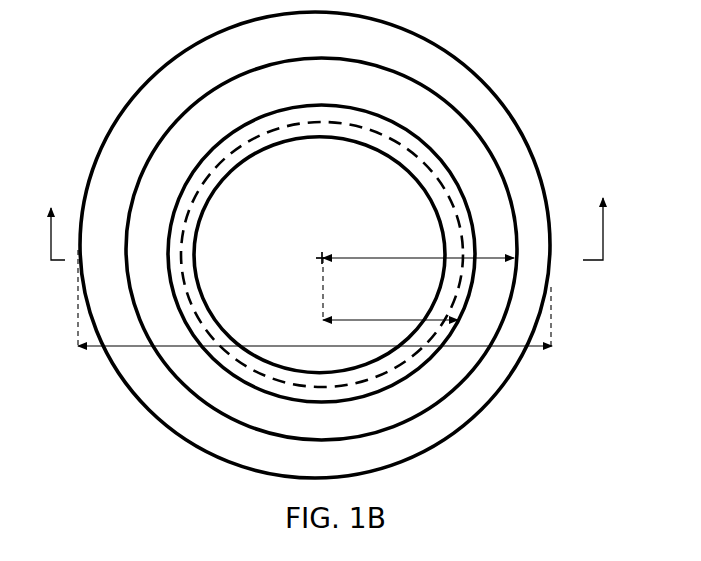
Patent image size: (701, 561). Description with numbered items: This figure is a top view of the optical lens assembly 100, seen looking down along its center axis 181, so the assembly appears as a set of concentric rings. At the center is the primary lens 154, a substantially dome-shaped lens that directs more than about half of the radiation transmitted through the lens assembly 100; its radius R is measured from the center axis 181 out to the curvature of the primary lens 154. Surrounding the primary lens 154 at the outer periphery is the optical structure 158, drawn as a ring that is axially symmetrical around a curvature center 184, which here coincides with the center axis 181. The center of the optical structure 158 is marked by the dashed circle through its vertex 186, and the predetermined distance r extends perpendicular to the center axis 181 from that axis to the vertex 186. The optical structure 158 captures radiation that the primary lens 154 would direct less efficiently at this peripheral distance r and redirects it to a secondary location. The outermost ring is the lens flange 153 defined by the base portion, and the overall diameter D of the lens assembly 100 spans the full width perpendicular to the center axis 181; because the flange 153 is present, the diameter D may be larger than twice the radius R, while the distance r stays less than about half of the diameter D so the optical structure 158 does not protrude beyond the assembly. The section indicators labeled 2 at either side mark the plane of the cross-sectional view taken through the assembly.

The optical lens assembly 100 is at (121, 46).
The lens flange 153 is at (350, 46).
The optical structure 158 is at (263, 138).
The vertex 186 is at (326, 121).
The primary lens 154 is at (358, 210).
The center axis 181 is at (320, 256).
The curvature center 184 is at (322, 258).
The radius R is at (392, 257).
The predetermined distance r is at (388, 318).
The diameter D is at (363, 349).
The section line 2- 2 is at (326, 216).